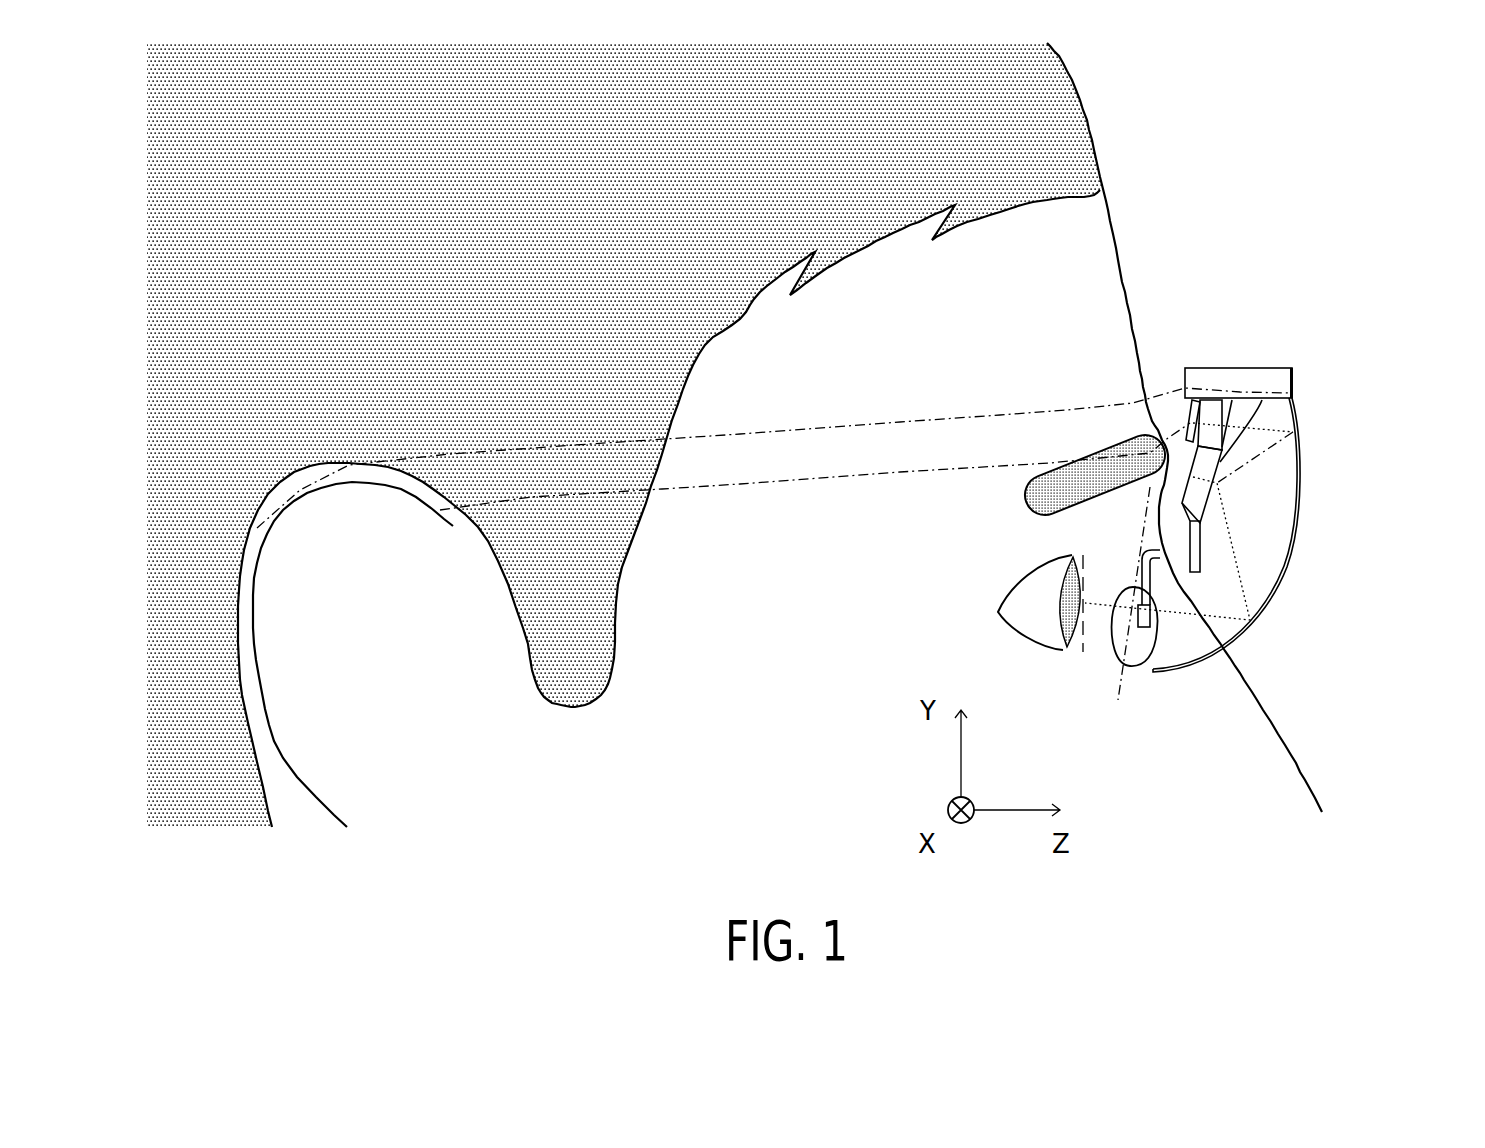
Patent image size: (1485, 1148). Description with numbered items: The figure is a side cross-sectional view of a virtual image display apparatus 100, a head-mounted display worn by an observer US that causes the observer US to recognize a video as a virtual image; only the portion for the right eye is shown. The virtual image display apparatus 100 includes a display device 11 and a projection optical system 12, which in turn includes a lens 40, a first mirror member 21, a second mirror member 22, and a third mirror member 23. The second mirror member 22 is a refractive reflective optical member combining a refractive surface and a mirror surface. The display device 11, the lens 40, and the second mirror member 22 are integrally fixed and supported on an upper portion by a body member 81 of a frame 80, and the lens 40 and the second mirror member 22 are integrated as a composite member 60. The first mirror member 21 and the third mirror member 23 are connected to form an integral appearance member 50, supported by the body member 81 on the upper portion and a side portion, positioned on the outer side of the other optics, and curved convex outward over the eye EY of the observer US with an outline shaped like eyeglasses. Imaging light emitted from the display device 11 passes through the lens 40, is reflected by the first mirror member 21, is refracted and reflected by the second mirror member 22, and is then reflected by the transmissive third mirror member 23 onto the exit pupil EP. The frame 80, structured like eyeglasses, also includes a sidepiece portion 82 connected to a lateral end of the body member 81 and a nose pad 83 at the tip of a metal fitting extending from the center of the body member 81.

The virtual image display apparatus 100 is at (1254, 454).
The display device 11 is at (1192, 400).
The lens 40 is at (1213, 403).
The projection optical system 12 is at (1273, 410).
The body member 81 is at (1248, 383).
The frame 80 is at (1020, 410).
The sidepiece portion 82 is at (932, 463).
The nose pad 83 is at (1143, 657).
The first mirror member 21 is at (1308, 395).
The second mirror member 22 is at (1218, 487).
The third mirror member 23 is at (1300, 573).
The composite member 60 is at (1228, 485).
The appearance member 50 is at (1313, 537).
The observer US is at (1135, 327).
The eye EY is at (1060, 575).
The exit pupil EP is at (1085, 577).